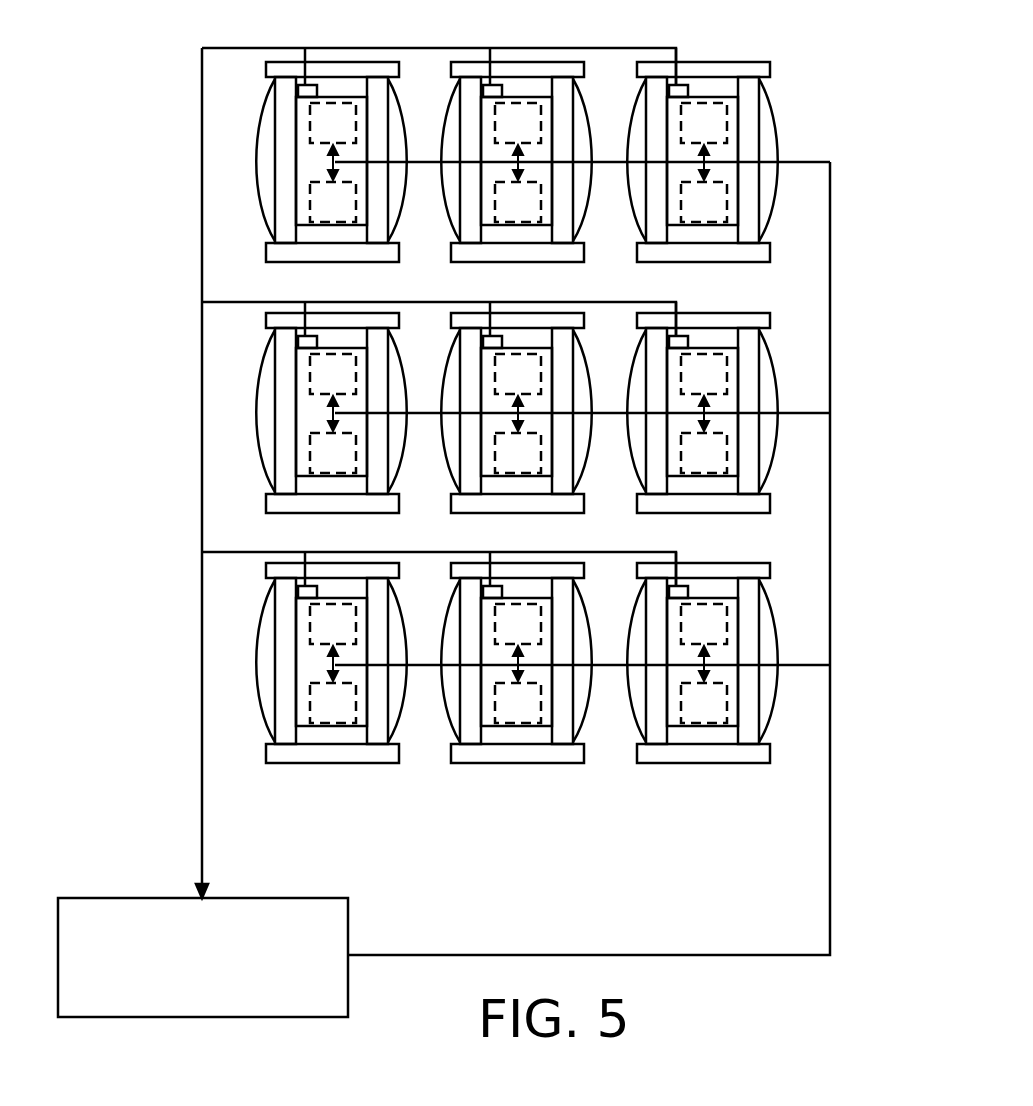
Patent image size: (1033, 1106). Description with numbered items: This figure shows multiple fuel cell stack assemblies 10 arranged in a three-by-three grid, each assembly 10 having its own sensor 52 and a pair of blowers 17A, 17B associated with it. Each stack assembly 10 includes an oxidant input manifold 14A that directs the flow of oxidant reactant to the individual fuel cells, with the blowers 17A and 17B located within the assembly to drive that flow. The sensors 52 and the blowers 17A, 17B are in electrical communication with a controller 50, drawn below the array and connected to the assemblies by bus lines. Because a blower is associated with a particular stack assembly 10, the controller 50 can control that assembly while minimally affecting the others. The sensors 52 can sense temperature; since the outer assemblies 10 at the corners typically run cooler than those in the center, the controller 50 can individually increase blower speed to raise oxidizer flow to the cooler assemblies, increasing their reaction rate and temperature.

The fuel cell stack assembly 10 is at (260, 215).
The oxidant input manifold 14A is at (302, 128).
The blower 17A is at (715, 120).
The blower 17B is at (720, 190).
The controller 50 is at (293, 897).
The sensor 52 is at (317, 92).